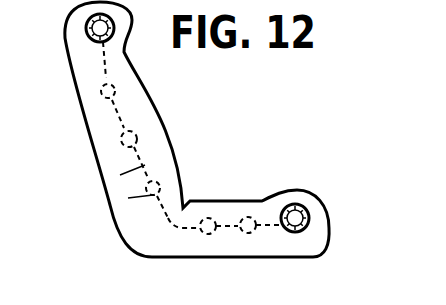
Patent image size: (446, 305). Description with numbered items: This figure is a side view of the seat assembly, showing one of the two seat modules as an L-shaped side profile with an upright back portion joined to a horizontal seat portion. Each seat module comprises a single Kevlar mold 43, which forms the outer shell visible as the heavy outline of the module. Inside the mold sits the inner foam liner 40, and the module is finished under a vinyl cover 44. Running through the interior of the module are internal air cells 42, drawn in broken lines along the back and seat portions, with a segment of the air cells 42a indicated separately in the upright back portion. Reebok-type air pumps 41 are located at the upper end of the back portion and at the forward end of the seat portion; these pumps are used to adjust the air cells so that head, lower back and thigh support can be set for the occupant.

The inner foam liner 40 is at (152, 115).
The Reebok-type air pump 41 is at (86, 32).
The internal air cell 42 is at (101, 47).
The flexible member segment 42a is at (110, 183).
The single Kevlar mold 43 is at (82, 125).
The vinyl cover 44 is at (193, 181).